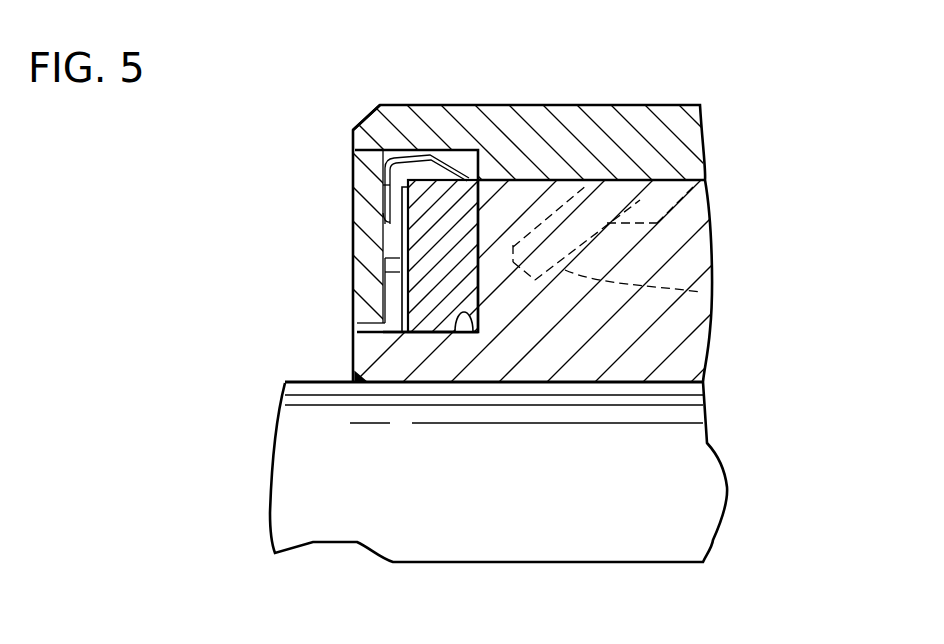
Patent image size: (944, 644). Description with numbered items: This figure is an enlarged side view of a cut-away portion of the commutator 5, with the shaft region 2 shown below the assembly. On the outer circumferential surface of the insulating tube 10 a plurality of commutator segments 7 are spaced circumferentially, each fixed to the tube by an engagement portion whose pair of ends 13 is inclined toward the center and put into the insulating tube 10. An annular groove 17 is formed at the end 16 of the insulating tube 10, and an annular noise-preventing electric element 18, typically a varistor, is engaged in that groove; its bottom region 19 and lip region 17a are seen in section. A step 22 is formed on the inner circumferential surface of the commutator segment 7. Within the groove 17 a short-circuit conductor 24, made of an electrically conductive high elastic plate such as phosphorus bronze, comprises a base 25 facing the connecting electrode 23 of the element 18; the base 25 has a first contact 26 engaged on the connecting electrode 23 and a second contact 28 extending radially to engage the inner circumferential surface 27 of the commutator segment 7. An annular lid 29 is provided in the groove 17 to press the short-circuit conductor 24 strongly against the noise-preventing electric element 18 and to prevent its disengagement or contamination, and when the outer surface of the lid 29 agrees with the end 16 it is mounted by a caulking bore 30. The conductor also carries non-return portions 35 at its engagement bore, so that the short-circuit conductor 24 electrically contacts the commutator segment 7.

The rotary shaft 2 is at (703, 502).
The commutator 5 is at (712, 155).
The commutator segment 7 is at (640, 122).
The insulating tube 10 is at (668, 337).
The ends of the engagement portion 13 is at (700, 292).
The end of the insulating tube 16 is at (352, 128).
The annular groove 17 is at (438, 325).
The seal lip 17a is at (470, 334).
The noise-preventing electric element 18 is at (482, 240).
The bottom face of recess 19 is at (430, 338).
The step 22 is at (353, 153).
The connecting electrode 23 is at (386, 185).
The short-circuit conductor 24 is at (398, 160).
The base 25 is at (386, 272).
The first contact 26 is at (386, 212).
The housing surface 7a 27 is at (493, 124).
The second contact 28 is at (452, 150).
The lid 29 is at (353, 221).
The caulking bore 30 is at (357, 146).
The non-return portions 35 is at (385, 256).